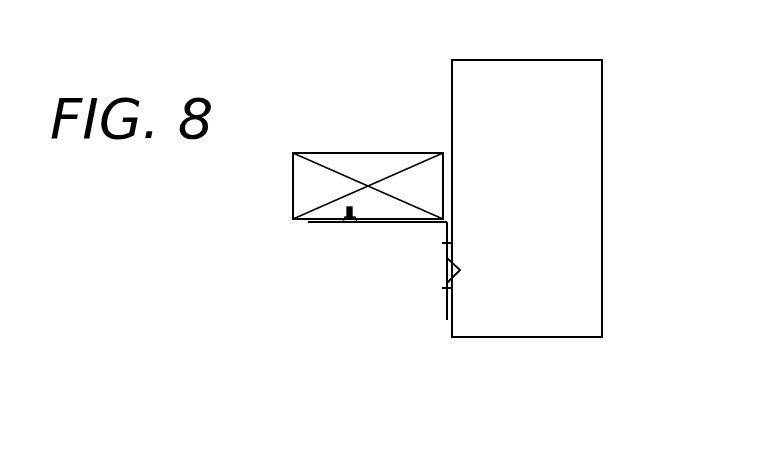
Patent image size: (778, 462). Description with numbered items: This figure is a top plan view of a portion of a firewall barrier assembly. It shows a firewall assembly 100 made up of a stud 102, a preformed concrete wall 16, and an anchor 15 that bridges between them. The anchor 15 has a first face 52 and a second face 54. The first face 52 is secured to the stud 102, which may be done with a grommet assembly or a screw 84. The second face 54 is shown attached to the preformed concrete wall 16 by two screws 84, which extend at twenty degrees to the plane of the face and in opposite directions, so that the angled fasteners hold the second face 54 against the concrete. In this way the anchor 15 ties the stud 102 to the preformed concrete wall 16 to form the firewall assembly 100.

The firewall assembly 100 is at (371, 62).
The preformed concrete wall 16 is at (580, 140).
The stud 102 is at (341, 163).
The anchor 15 is at (403, 228).
The first face 52 is at (318, 228).
The second face 54 is at (445, 311).
The screw 84 is at (444, 246).